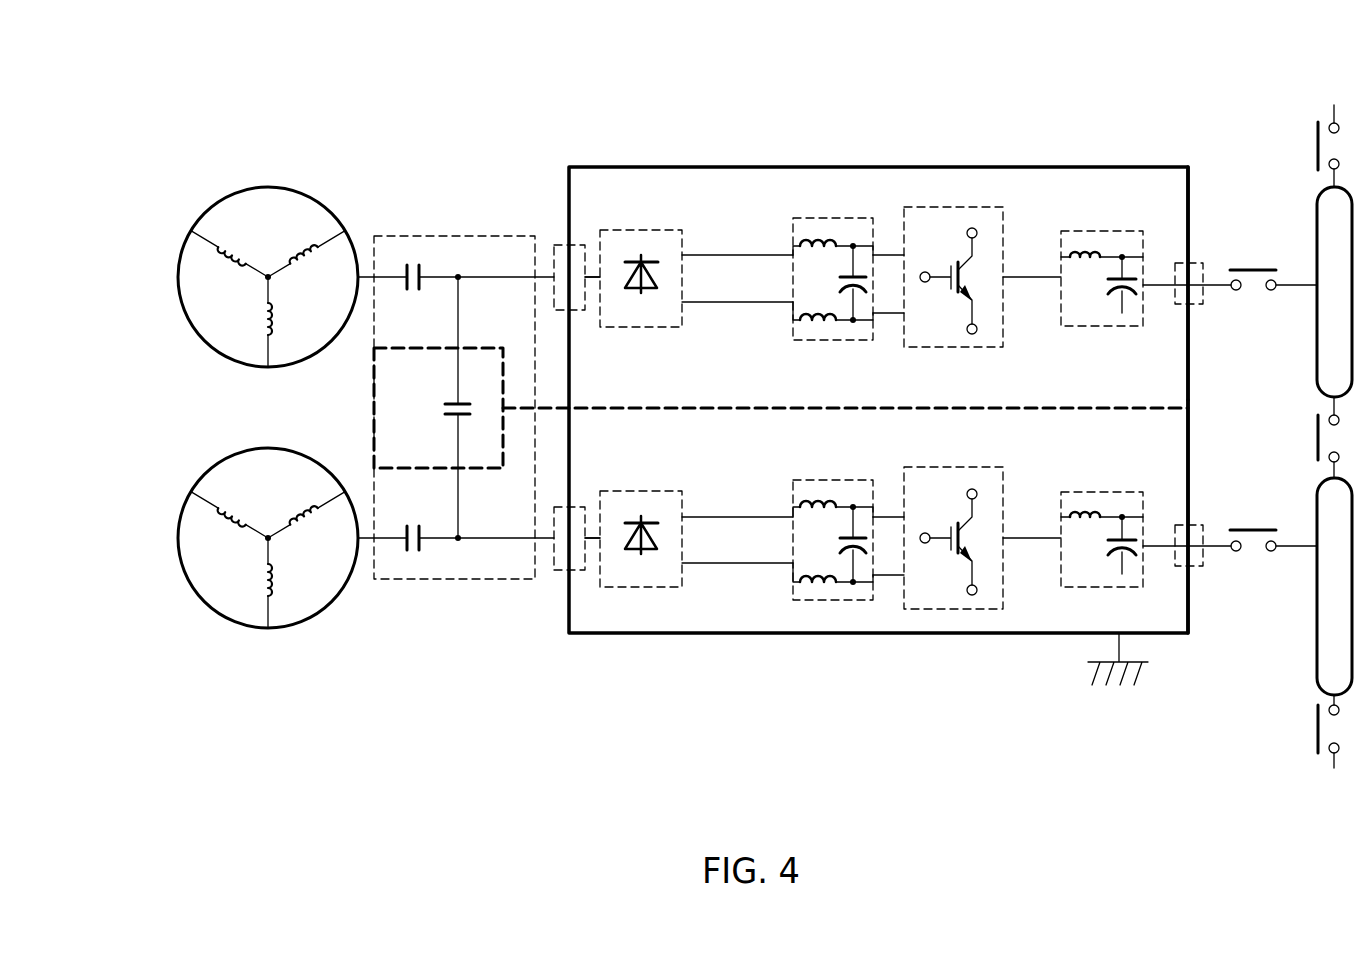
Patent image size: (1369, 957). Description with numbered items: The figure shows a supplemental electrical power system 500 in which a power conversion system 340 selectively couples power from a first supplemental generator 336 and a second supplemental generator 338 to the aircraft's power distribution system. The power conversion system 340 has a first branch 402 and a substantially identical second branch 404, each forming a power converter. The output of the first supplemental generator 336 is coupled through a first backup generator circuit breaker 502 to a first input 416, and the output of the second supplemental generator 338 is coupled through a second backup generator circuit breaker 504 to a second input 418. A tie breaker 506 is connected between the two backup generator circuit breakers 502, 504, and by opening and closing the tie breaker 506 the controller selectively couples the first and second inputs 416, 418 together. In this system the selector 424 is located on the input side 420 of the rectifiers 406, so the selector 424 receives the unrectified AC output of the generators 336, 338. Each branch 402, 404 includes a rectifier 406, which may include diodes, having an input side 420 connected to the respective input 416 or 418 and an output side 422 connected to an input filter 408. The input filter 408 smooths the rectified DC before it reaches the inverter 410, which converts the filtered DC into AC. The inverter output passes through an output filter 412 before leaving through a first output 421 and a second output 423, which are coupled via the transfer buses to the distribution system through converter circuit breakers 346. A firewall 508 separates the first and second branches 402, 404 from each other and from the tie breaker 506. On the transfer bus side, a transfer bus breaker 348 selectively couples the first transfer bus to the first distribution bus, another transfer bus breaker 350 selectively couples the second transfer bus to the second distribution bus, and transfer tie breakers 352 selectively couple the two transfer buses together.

The supplemental electrical power system 500 is at (592, 90).
The power conversion system 340 is at (611, 165).
The second supplemental generator 338 is at (200, 222).
The first supplemental generator 336 is at (200, 484).
The selector 424 is at (398, 236).
The second backup generator circuit breaker 504 is at (421, 266).
The first backup generator circuit breaker 502 is at (421, 552).
The tie breaker 506 is at (447, 414).
The firewall 508 is at (642, 406).
The second input 418 is at (555, 246).
The first input 416 is at (560, 572).
The input side 420 is at (597, 243).
The rectifier 406 is at (636, 230).
The output side 422 is at (686, 245).
The input filter 408 is at (820, 218).
The inverter 410 is at (932, 207).
The output filter 412 is at (1080, 231).
The second output 423 is at (1197, 263).
The first output 421 is at (1197, 567).
The second branch 404 is at (1198, 182).
The first branch 402 is at (1196, 628).
The converter circuit breaker 346 is at (1253, 268).
The transfer bus breaker 350 is at (1317, 145).
The transfer tie breaker 352 is at (1318, 437).
The transfer bus breaker 348 is at (1318, 740).